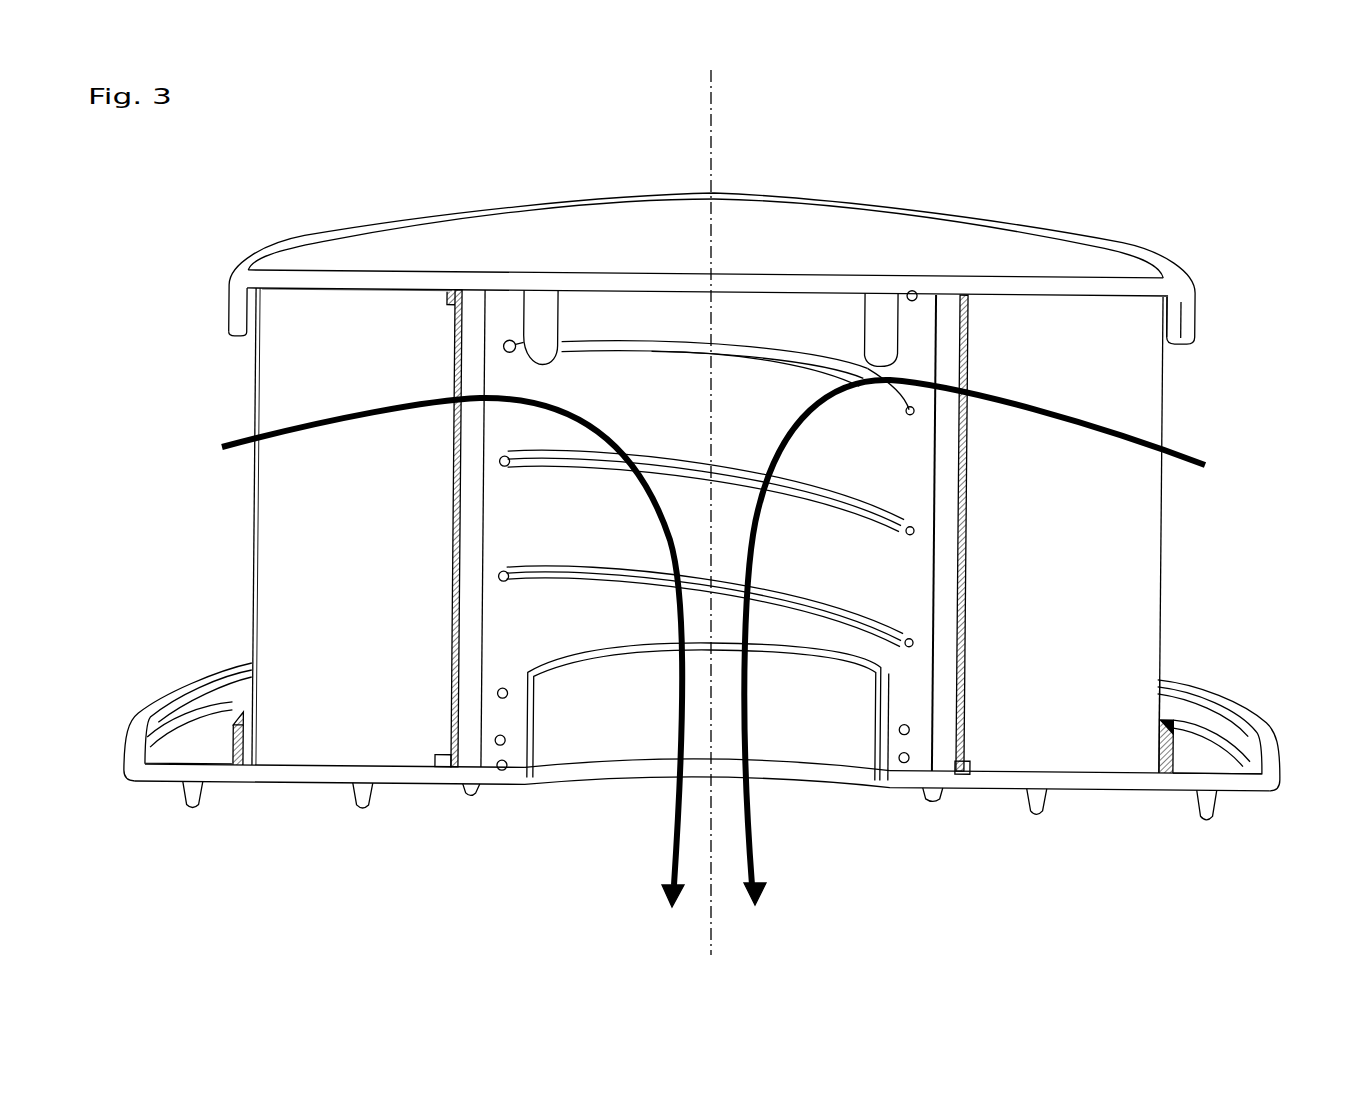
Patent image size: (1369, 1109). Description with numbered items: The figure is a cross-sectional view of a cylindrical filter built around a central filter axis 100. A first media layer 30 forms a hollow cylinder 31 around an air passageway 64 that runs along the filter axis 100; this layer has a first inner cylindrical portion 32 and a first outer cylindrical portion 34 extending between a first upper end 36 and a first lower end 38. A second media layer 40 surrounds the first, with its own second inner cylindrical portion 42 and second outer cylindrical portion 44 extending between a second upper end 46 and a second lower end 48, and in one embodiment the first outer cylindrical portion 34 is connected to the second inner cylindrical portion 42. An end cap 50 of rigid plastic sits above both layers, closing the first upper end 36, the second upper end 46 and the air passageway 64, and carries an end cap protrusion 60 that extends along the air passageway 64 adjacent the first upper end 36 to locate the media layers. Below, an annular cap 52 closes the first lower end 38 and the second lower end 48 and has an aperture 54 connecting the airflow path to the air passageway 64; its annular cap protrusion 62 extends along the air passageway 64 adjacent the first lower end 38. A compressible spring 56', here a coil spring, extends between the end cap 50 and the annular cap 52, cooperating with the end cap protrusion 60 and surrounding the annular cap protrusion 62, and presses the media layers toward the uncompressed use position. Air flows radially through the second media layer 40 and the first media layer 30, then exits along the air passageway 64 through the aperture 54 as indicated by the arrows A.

The filter axis 100 is at (716, 147).
The first media layer 30 is at (950, 410).
The hollow cylinder 31 is at (853, 556).
The first inner cylindrical portion 32 is at (937, 436).
The first outer cylindrical portion 34 is at (967, 538).
The first upper end 36 is at (948, 306).
The first lower end 38 is at (948, 758).
The second media layer 40 is at (303, 482).
The second inner cylindrical portion 42 is at (450, 368).
The second outer cylindrical portion 44 is at (256, 556).
The second upper end 46 is at (341, 296).
The second lower end 48 is at (320, 758).
The end cap 50 is at (762, 240).
The annular cap 52 is at (912, 786).
The aperture 54 is at (627, 796).
The compressible spring 56' is at (487, 550).
The end cap protrusion 60 is at (880, 343).
The annular cap protrusion 62 is at (882, 728).
The air passageway 64 is at (660, 636).
The arrows A is at (652, 565).